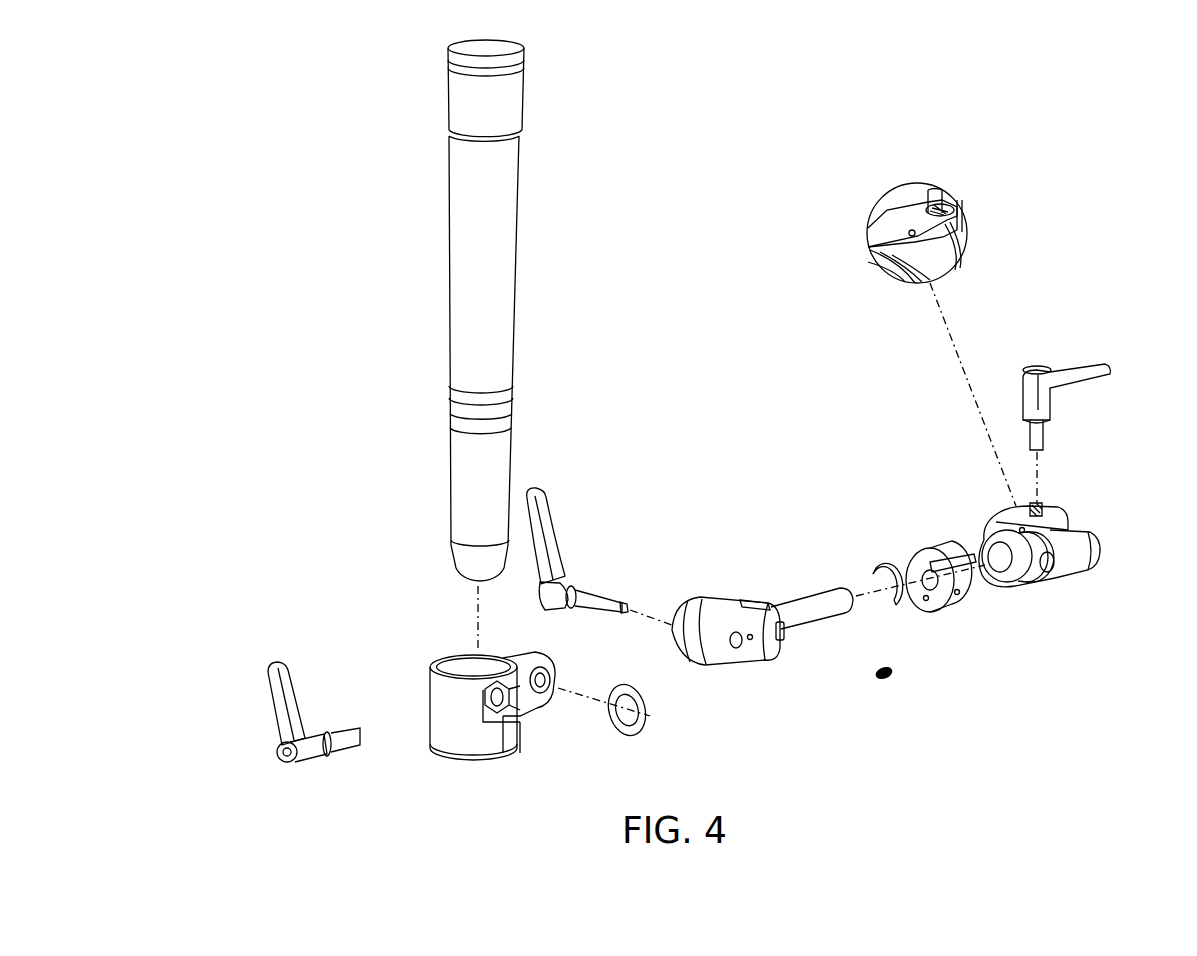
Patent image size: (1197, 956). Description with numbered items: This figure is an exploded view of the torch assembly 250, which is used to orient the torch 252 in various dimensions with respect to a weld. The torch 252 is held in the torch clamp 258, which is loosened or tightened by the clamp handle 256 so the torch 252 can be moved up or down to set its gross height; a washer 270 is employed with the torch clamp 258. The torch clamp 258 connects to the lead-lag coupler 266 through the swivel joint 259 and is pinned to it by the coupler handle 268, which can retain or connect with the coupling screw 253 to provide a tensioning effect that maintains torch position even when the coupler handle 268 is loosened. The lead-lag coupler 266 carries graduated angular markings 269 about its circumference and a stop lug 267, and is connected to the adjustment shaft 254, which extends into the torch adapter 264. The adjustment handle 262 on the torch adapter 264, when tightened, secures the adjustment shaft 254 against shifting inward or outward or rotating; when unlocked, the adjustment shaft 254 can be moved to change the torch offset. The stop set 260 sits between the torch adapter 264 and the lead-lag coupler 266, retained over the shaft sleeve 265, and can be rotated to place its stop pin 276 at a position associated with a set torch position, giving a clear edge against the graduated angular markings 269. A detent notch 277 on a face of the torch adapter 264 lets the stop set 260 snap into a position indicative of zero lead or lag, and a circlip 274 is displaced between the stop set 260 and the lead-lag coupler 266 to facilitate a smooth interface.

The torch assembly 250 is at (316, 116).
The torch 252 is at (447, 316).
The coupling screw 253 is at (893, 680).
The adjustment shaft 254 is at (783, 607).
The clamp handle 256 is at (278, 690).
The torch clamp 258 is at (430, 682).
The swivel joint 259 is at (545, 700).
The stop set 260 is at (937, 608).
The adjustment handle 262 is at (1100, 355).
The torch adapter 264 is at (1108, 542).
The shaft sleeve 265 is at (1013, 578).
The lead-lag coupler 266 is at (700, 603).
The stop lug 267 is at (782, 640).
The coupler handle 268 is at (553, 540).
The graduated angular markings 269 is at (748, 598).
The washer 270 is at (648, 705).
The circlip 274 is at (877, 575).
The stop pin 276 is at (925, 572).
The detent notch 277 is at (920, 236).